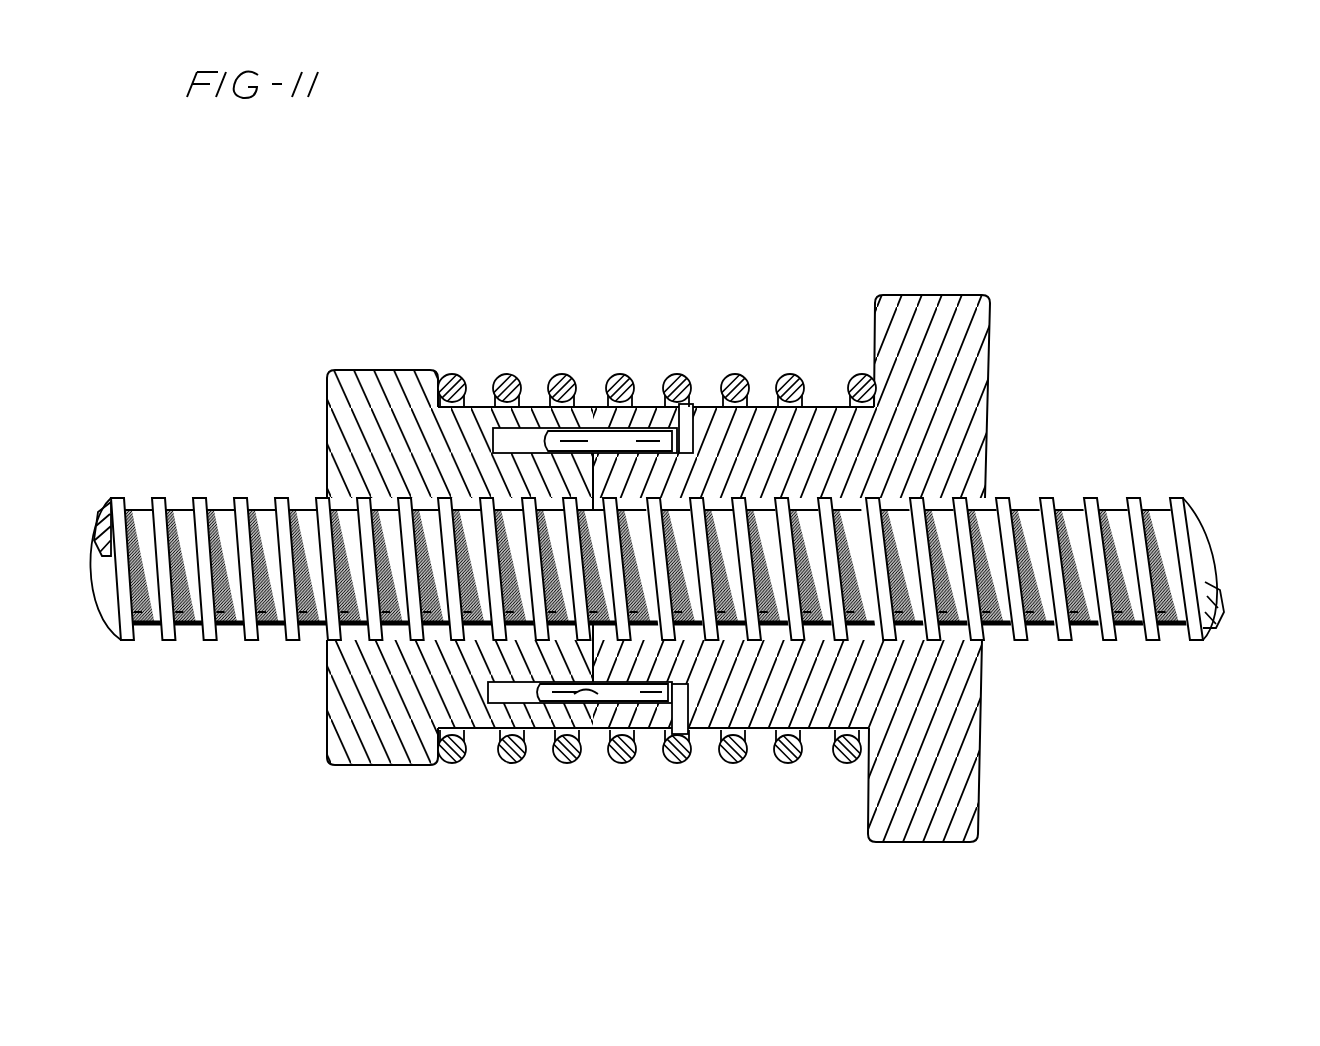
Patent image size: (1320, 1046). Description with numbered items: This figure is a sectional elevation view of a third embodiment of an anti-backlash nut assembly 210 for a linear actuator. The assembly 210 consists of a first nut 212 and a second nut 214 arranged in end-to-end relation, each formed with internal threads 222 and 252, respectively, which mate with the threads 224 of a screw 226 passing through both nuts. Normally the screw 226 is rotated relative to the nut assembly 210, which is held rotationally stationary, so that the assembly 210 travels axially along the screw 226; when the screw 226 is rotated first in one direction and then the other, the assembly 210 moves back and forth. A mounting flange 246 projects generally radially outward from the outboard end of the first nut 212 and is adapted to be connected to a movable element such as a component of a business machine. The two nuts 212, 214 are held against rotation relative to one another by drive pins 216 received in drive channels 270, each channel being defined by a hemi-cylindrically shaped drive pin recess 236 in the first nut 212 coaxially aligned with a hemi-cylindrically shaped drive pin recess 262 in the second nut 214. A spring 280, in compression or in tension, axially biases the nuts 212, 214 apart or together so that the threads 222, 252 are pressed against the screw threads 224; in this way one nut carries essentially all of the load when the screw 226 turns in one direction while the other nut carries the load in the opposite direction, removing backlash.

The anti-backlash nut assembly 210 is at (763, 818).
The first nut 212 is at (961, 320).
The second nut 214 is at (382, 382).
The drive pin 216 is at (571, 438).
The internal threads of first nut 222 is at (958, 531).
The threads of screw 224 is at (1136, 500).
The screw 226 is at (1186, 524).
The drive pin recess 236 is at (681, 708).
The mounting flange 246 is at (908, 320).
The internal threads of second nut 252 is at (352, 600).
The drive pin recess 262 is at (592, 692).
The drive channel 270 is at (649, 434).
The spring 280 is at (511, 766).